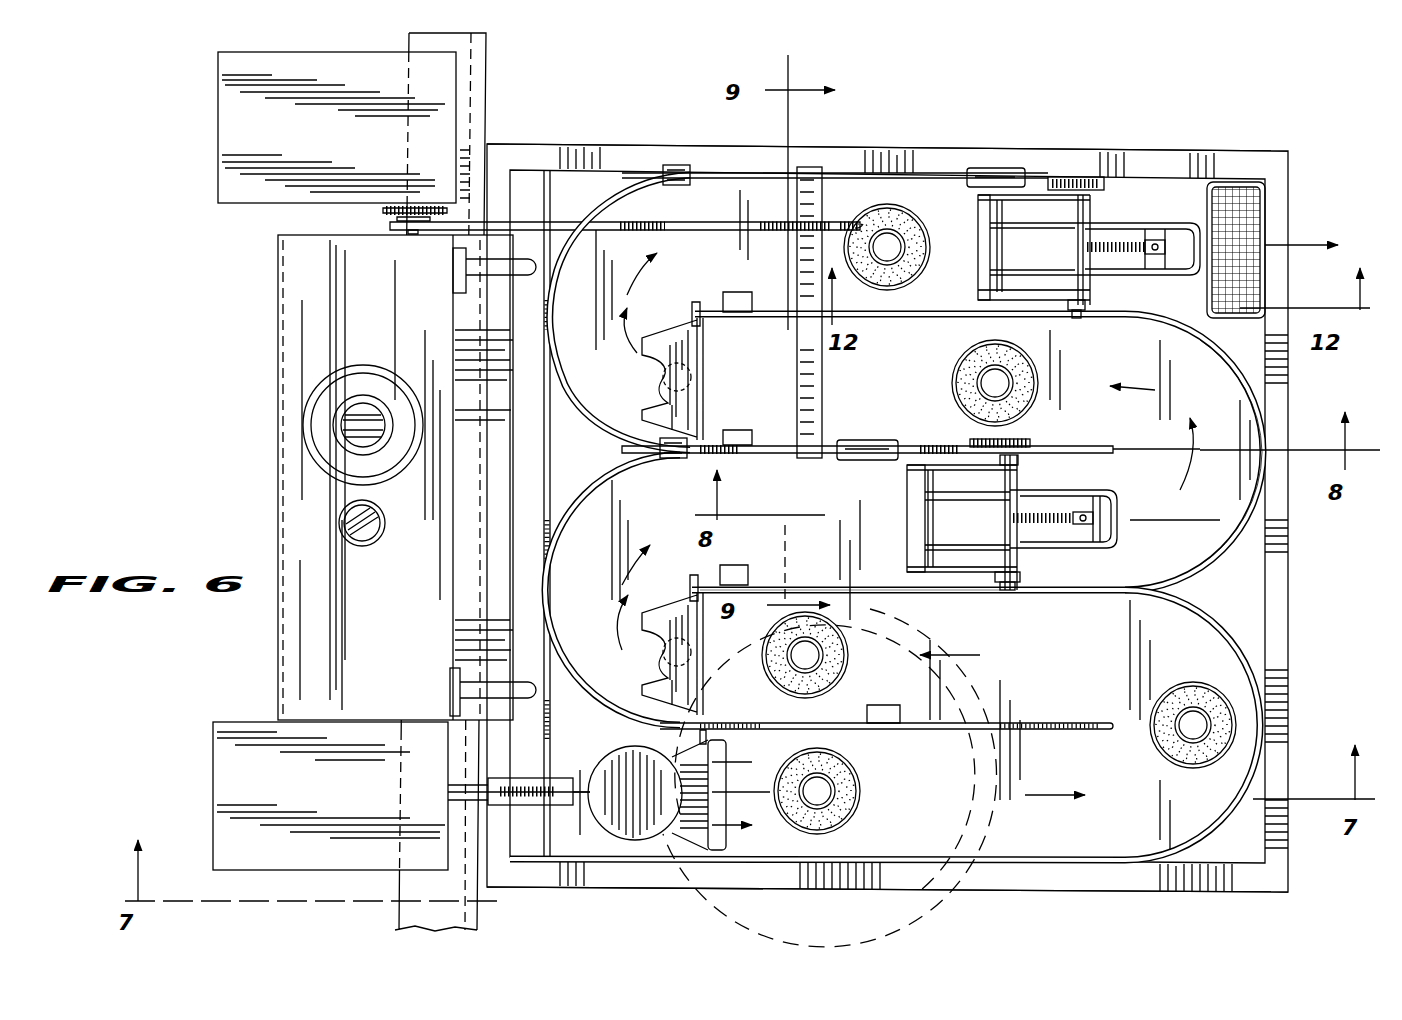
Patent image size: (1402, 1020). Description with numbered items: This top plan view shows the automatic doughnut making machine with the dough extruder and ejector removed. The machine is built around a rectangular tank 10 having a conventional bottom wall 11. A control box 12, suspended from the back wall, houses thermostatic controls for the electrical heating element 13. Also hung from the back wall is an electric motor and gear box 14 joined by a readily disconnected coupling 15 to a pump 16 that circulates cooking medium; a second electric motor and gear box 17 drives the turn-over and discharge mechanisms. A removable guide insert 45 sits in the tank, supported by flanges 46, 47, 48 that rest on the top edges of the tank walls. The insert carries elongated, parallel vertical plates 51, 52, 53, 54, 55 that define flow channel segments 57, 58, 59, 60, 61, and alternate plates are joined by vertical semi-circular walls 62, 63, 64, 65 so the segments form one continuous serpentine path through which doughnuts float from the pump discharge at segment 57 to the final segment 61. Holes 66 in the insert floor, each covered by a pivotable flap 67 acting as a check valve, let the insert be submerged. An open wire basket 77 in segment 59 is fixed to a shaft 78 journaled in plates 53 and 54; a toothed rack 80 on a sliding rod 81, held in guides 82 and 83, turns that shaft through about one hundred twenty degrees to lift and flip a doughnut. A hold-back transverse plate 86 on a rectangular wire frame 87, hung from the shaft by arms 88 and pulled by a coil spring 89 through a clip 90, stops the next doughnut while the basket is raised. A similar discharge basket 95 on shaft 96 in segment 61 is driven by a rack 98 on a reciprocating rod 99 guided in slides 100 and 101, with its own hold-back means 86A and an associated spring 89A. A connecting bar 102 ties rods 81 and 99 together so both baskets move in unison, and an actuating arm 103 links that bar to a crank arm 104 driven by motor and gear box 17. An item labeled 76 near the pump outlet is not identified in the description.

The rectangular tank 10 is at (1240, 140).
The bottom wall 11 is at (590, 480).
The control box 12 is at (278, 355).
The electrical heating element 13 is at (490, 282).
The electric motor and gear box 14 is at (230, 772).
The coupling 15 is at (525, 785).
The pump 16 is at (638, 822).
The electric motor and gear box 17 is at (218, 105).
The removable guide insert 45 is at (1228, 557).
The flange 46 is at (1292, 702).
The flange 47 is at (1050, 891).
The flange 48 is at (940, 170).
The vertical plate 51 is at (940, 848).
The vertical plate 52 is at (1060, 722).
The vertical plate 53 is at (872, 592).
The vertical plate 54 is at (1100, 450).
The vertical plate 55 is at (952, 318).
The flow channel segment 57 is at (1080, 759).
The flow channel segment 58 is at (1125, 656).
The flow channel segment 59 is at (825, 552).
The flow channel segment 60 is at (880, 407).
The flow channel segment 61 is at (782, 276).
The vertical semi-circular wall 62 is at (1242, 650).
The vertical semi-circular wall 63 is at (586, 680).
The vertical semi-circular wall 64 is at (1245, 390).
The vertical semi-circular wall 65 is at (590, 405).
The hole 66 is at (660, 375).
The pivotable flap 67 is at (658, 355).
The cone drive 76 is at (690, 850).
The open wire basket 77 is at (985, 580).
The shaft 78 is at (1020, 557).
The toothed rack 80 is at (1012, 440).
The rod 81 is at (948, 445).
The guide 82 is at (873, 460).
The guide 83 is at (676, 458).
The transverse plate 86 is at (910, 540).
The hold-back means 86A is at (978, 255).
The rectangular wire frame 87 is at (1105, 550).
The arm 88 is at (965, 572).
The coil spring 89 is at (1045, 515).
The spring 89A is at (1122, 242).
The clip 90 is at (1090, 517).
The basket means 95 is at (1055, 300).
The shaft 96 is at (1098, 310).
The rack 98 is at (1068, 178).
The reciprocating rod 99 is at (850, 172).
The slide 100 is at (992, 168).
The slide 101 is at (675, 165).
The connecting bar 102 is at (797, 352).
The actuating arm 103 is at (568, 222).
The crank arm 104 is at (414, 234).